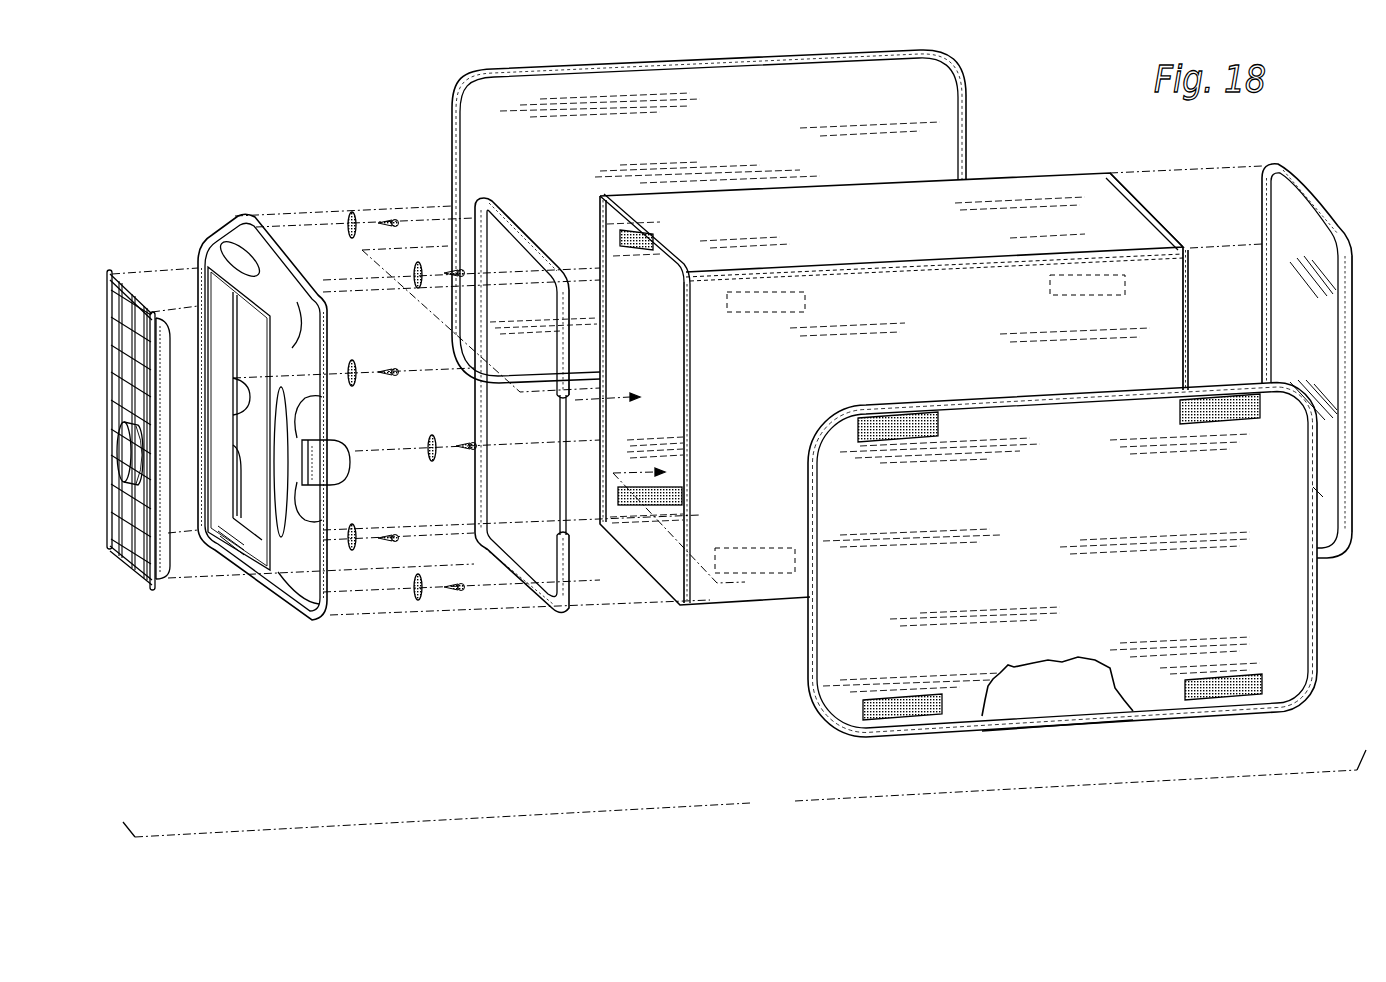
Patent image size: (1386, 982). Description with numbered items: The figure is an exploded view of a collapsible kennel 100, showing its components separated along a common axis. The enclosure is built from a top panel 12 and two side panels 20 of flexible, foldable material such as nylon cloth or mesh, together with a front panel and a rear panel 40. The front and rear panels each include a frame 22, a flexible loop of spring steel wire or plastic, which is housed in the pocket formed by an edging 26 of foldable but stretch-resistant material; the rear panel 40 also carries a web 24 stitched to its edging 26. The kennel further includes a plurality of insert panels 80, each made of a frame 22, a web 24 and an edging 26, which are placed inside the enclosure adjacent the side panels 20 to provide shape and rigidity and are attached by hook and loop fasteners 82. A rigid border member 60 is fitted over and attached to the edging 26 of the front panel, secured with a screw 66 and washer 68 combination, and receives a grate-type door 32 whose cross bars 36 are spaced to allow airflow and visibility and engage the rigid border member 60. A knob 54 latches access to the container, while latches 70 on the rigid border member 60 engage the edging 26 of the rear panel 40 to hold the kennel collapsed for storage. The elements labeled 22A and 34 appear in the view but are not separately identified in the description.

The top panel 12 is at (1073, 215).
The side panels 20 is at (1160, 304).
The frame 22 is at (1080, 730).
The side edge 22A is at (568, 532).
The web 24 is at (963, 657).
The edging 26 is at (472, 417).
The door 32 is at (125, 292).
The end wall 34 is at (625, 298).
The cross bars 36 is at (132, 530).
The rear panel 40 is at (1352, 447).
The knob 54 is at (127, 460).
The rigid border member 60 is at (207, 232).
The screw 66 is at (391, 212).
The washer 68 is at (352, 212).
The latches 70 is at (350, 468).
The insert panels 80 is at (920, 138).
The hook and loop fasteners 82 is at (650, 505).
The collapsible kennel 100 is at (744, 793).